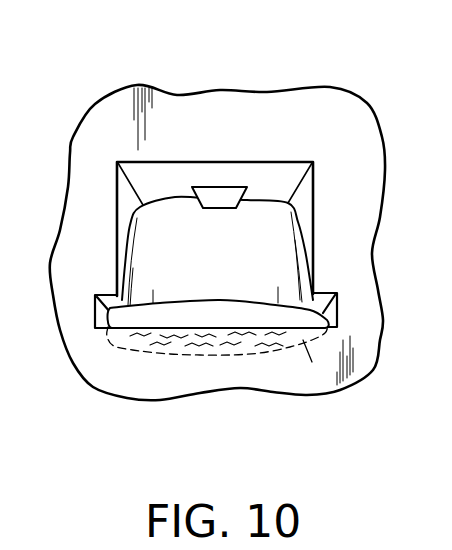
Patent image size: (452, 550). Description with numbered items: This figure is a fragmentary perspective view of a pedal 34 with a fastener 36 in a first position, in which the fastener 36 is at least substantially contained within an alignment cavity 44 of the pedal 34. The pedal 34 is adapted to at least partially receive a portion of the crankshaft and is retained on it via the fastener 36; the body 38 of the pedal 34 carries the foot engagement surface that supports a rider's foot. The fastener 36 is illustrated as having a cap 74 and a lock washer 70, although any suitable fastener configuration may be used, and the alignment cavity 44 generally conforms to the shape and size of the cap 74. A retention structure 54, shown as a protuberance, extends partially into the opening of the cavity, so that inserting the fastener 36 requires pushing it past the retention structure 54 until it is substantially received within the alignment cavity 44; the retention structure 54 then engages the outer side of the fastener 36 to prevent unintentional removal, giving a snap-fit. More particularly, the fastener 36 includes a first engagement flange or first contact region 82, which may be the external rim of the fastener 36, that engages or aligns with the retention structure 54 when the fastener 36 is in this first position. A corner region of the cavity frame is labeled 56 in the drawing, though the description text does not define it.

The pedal 34 is at (192, 85).
The fastener 36 is at (230, 271).
The body 38 is at (352, 150).
The alignment cavity 44 is at (270, 194).
The retention structure 54 is at (218, 188).
The frame corner 56 is at (133, 168).
The lock washer 70 is at (315, 372).
The cap 74 is at (285, 242).
The first contact region 82 is at (130, 212).